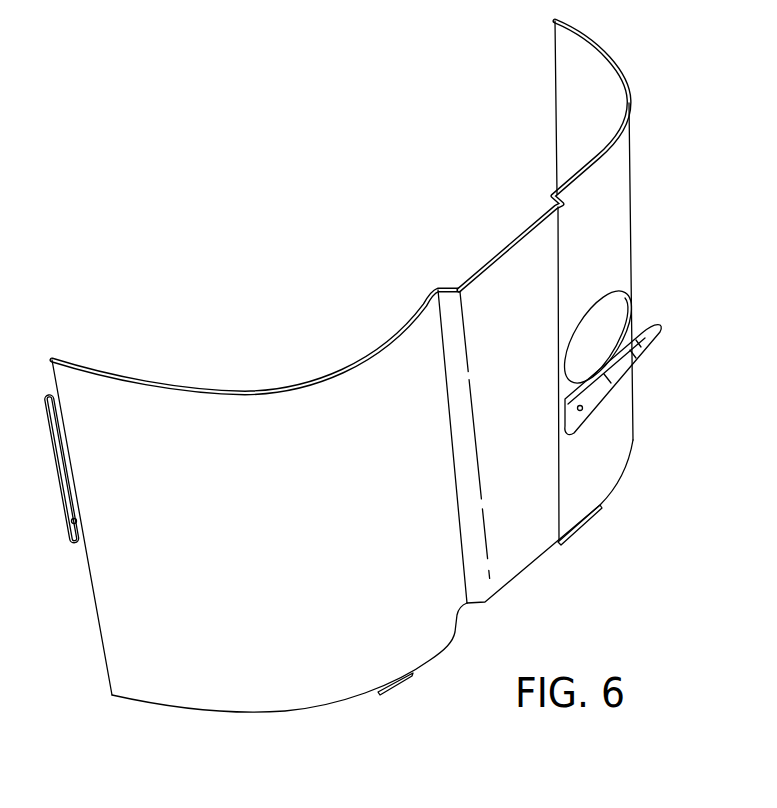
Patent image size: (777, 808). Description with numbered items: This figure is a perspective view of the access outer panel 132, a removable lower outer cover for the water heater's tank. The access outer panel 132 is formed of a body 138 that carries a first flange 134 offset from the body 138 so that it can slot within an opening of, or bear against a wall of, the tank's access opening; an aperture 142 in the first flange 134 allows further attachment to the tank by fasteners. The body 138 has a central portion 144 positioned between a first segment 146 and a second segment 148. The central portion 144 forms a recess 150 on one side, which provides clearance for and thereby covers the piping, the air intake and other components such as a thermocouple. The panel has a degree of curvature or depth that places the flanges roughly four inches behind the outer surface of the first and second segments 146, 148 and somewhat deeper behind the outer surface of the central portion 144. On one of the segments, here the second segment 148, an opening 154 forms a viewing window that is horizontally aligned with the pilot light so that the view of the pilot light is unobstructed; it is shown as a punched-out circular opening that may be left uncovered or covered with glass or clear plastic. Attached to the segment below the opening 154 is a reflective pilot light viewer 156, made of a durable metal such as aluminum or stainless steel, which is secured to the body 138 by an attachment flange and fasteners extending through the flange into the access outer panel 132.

The access outer panel 132 is at (334, 178).
The first flange 134 is at (62, 437).
The body 138 is at (332, 434).
The aperture 142 is at (78, 522).
The central portion 144 is at (528, 570).
The first segment 146 is at (222, 692).
The second segment 148 is at (616, 457).
The recess 150 is at (494, 226).
The opening 154 is at (600, 322).
The reflective pilot light viewer 156 is at (636, 366).